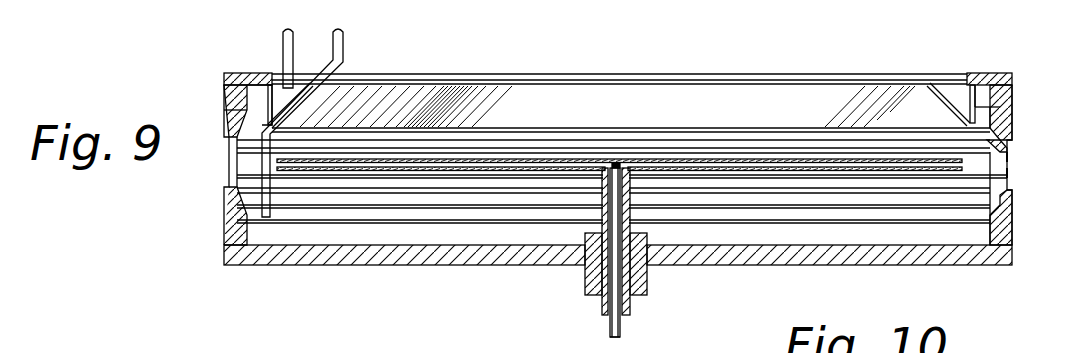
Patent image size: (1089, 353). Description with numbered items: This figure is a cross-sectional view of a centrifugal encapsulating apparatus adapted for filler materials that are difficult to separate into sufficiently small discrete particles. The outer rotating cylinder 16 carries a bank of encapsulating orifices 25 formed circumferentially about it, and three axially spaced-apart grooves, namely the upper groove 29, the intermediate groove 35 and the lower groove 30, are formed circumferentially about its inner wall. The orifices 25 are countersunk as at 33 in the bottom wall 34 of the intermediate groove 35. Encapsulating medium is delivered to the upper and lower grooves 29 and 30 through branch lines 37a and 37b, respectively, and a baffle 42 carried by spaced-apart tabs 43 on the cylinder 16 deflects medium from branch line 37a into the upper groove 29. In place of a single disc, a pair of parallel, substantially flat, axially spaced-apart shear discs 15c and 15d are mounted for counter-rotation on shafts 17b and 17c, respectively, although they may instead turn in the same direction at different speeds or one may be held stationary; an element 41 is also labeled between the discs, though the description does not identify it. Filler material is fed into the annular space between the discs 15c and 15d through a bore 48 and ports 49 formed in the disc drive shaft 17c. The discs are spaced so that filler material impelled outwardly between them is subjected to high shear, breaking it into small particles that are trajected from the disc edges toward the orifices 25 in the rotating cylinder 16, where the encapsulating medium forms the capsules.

The cylinder 16 is at (1014, 93).
The encapsulating orifices 25 is at (1013, 166).
The upper groove 29 is at (244, 113).
The lower groove 30 is at (241, 214).
The countersunk surfaces 33 is at (1011, 160).
The bottom wall 34 is at (1010, 175).
The intermediate groove 35 is at (233, 160).
The branch line 37a is at (282, 46).
The branch line 37b is at (346, 34).
The electrode layer 41 is at (667, 163).
The baffle 42 is at (371, 95).
The tabs 43 is at (968, 95).
The bore 48 is at (617, 338).
The ports 49 is at (617, 162).
The shear disc 15c is at (547, 160).
The shear disc 15d is at (500, 168).
The shaft 17b is at (632, 310).
The disc drive shaft 17c is at (622, 331).